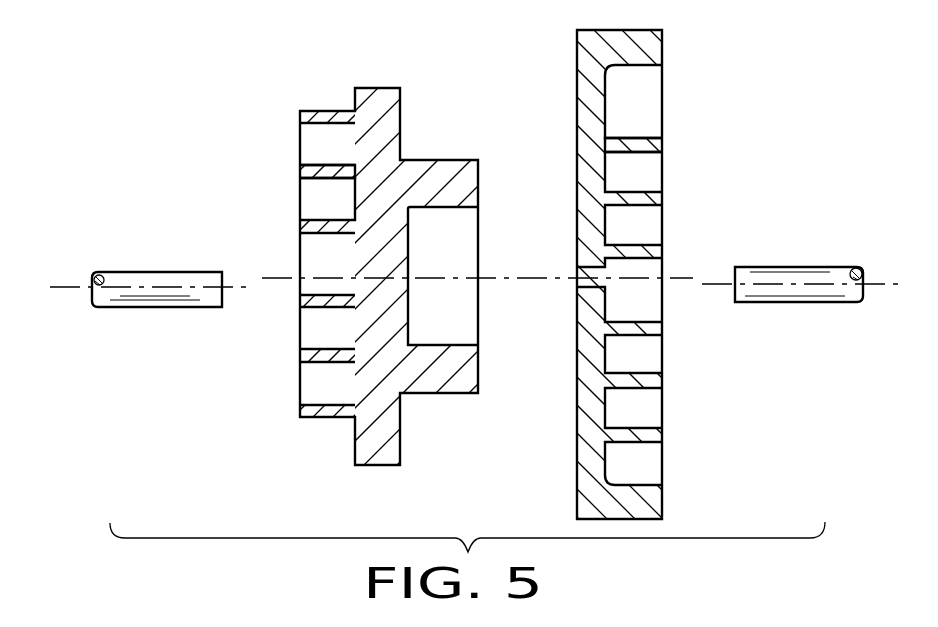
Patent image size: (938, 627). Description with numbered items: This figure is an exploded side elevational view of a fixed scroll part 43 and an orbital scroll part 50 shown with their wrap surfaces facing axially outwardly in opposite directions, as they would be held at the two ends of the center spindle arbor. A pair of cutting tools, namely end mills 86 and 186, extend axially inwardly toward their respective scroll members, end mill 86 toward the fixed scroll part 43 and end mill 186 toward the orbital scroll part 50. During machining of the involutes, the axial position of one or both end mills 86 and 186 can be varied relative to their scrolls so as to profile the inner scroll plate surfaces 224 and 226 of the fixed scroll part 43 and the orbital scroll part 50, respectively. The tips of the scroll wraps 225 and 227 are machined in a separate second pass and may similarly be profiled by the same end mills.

The orbital scroll part 50 is at (464, 300).
The scroll wrap tip 227 is at (300, 172).
The inner scroll plate surface 226 is at (355, 202).
The end mill 186 is at (143, 278).
The fixed scroll part 43 is at (499, 300).
The scroll wrap tip 225 is at (662, 143).
The inner scroll plate surface 224 is at (607, 172).
The end mill 86 is at (797, 272).